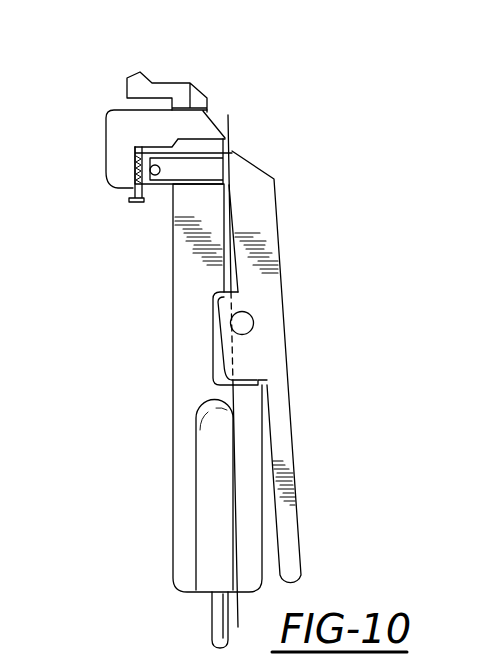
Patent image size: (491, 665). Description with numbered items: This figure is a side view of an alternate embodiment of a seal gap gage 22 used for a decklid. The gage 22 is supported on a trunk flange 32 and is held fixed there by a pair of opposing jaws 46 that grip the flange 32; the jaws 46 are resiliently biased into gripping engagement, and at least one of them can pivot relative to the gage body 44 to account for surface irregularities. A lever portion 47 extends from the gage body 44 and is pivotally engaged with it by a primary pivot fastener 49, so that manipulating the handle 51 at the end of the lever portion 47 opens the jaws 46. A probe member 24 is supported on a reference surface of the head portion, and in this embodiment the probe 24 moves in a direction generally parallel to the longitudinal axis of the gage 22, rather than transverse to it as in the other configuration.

The gage 22 is at (278, 107).
The probe member 24 is at (152, 83).
The trunk flange 32 is at (132, 195).
The gage body 44 is at (185, 268).
The opposing jaws 46 is at (110, 170).
The lever portion 47 is at (298, 368).
The primary pivot fastener 49 is at (254, 327).
The handle 51 is at (288, 513).